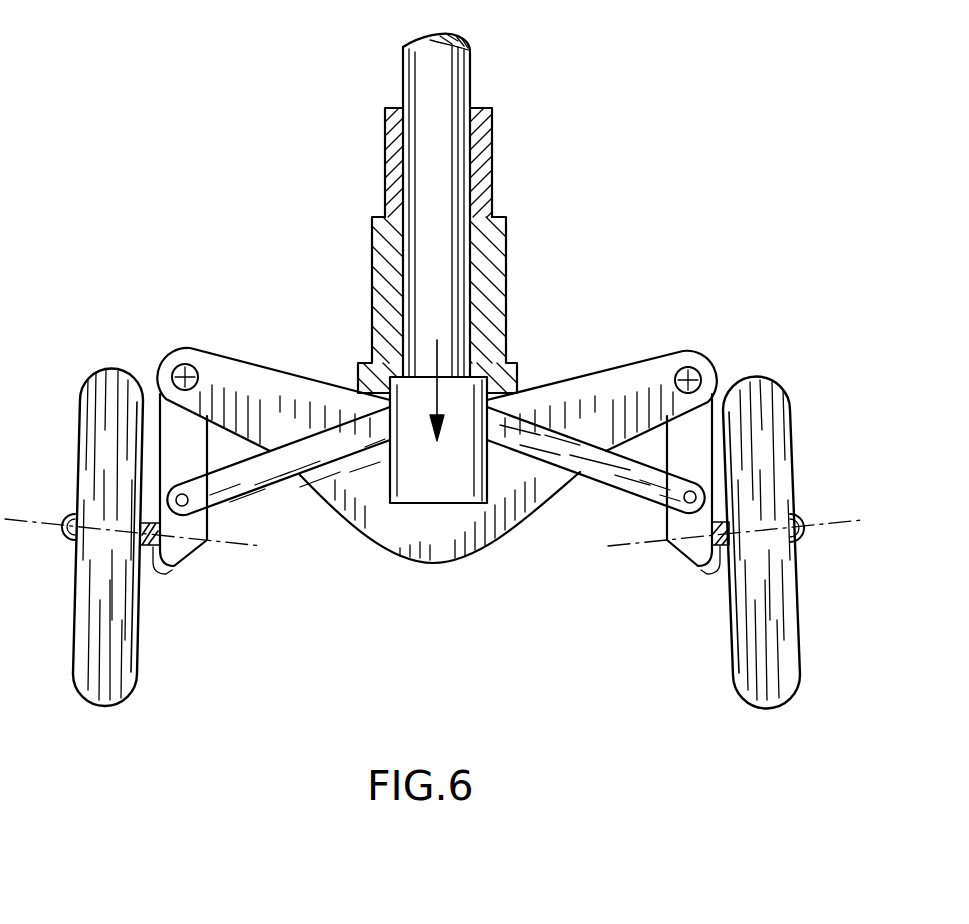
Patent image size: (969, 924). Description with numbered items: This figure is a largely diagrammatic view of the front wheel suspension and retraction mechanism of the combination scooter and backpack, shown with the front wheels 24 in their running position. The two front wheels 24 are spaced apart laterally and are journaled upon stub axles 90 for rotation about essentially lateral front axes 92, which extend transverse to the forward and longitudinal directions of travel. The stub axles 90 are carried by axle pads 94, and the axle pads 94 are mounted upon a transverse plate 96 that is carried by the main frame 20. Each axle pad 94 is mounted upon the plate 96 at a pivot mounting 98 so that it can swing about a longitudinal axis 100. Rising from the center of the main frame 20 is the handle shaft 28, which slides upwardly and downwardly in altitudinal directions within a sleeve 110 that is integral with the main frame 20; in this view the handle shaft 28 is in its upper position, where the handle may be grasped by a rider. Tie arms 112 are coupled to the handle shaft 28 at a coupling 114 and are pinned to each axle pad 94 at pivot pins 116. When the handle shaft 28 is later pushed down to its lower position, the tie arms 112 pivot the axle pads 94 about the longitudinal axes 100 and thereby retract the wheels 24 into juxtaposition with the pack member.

The main frame 20 is at (506, 268).
The wheels 24 is at (108, 706).
The handle shaft 28 is at (456, 72).
The stub axles 90 is at (155, 560).
The lateral front axes 92 is at (64, 532).
The axle pads 94 is at (176, 540).
The transverse plate 96 is at (422, 545).
The pivot mounting 98 is at (185, 364).
The longitudinal axes 100 is at (198, 352).
The sleeve 110 is at (492, 145).
The tie arms 112 is at (283, 468).
The coupling 114 is at (465, 495).
The pivot pins 116 is at (192, 512).